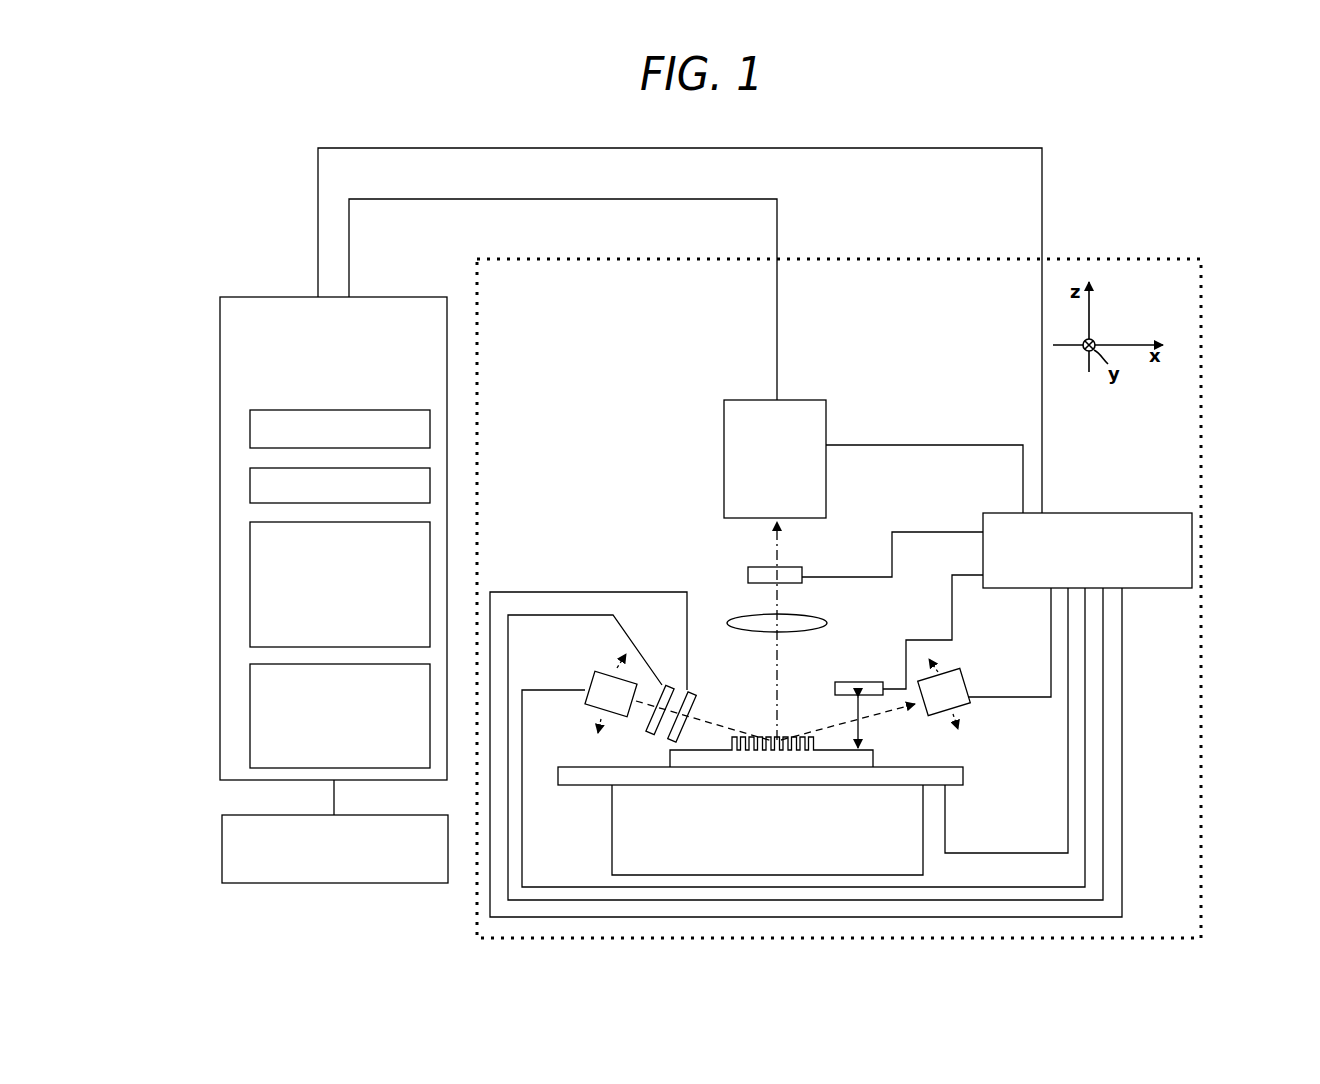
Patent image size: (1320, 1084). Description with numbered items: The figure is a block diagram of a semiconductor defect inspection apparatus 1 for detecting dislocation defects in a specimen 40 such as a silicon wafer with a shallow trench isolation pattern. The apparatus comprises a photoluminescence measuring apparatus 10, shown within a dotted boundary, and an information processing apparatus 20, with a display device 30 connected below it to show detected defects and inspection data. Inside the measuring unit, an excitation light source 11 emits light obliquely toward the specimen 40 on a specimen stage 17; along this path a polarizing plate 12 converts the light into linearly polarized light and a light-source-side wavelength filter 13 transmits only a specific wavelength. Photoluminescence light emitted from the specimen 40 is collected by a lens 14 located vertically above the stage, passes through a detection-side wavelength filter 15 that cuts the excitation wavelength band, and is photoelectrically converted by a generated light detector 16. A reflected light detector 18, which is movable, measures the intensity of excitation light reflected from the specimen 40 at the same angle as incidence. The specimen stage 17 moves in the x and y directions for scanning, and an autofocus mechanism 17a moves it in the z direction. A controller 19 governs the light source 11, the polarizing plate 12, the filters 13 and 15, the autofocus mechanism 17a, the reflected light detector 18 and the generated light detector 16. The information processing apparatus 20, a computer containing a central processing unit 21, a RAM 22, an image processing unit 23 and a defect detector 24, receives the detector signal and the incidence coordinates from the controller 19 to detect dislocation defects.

The semiconductor defect inspection apparatus 1 is at (1190, 195).
The photoluminescence measuring apparatus 10 is at (1124, 259).
The excitation light source 11 is at (586, 690).
The polarizing plate 12 is at (668, 686).
The light-source-side wavelength filter 13 is at (693, 695).
The lens 14 is at (745, 622).
The detection-side wavelength filter 15 is at (802, 572).
The generated light detector 16 is at (826, 428).
The specimen stage 17 is at (964, 772).
The autofocus mechanism 17a is at (847, 682).
The reflected light detector 18 is at (962, 672).
The controller 19 is at (1133, 513).
The information processing apparatus 20 is at (243, 297).
The central processing unit 21 is at (250, 430).
The RAM 22 is at (250, 487).
The image processing unit 23 is at (250, 628).
The defect detector 24 is at (250, 686).
The display device 30 is at (222, 848).
The specimen 40 is at (670, 751).